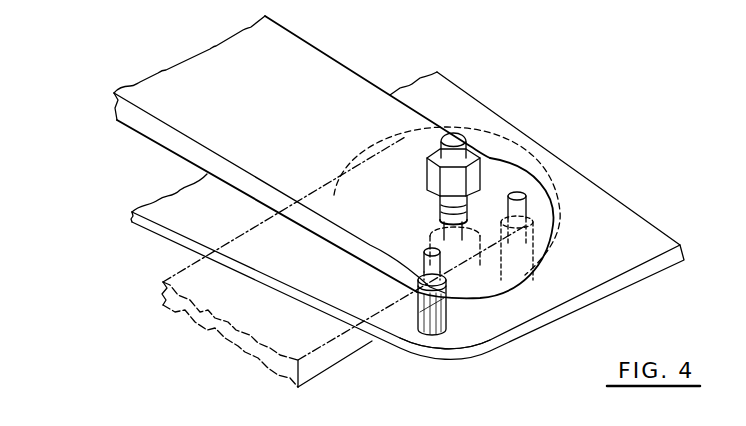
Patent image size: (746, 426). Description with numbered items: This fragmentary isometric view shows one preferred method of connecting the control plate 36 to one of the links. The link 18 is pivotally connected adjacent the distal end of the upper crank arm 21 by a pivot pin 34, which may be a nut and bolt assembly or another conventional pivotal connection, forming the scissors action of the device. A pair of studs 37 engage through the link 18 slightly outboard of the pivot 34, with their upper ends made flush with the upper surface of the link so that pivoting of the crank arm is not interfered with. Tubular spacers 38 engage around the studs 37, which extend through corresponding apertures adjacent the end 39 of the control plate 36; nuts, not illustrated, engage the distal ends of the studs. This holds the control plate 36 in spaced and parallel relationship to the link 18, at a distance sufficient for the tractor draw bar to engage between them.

The link 18 is at (359, 66).
The upper crank arm 21 is at (338, 367).
The pivot pin 34 is at (428, 152).
The control plate 36 is at (188, 222).
The studs 37 is at (422, 254).
The tubular spacers 38 is at (448, 312).
The end of the control plate 39 is at (470, 334).